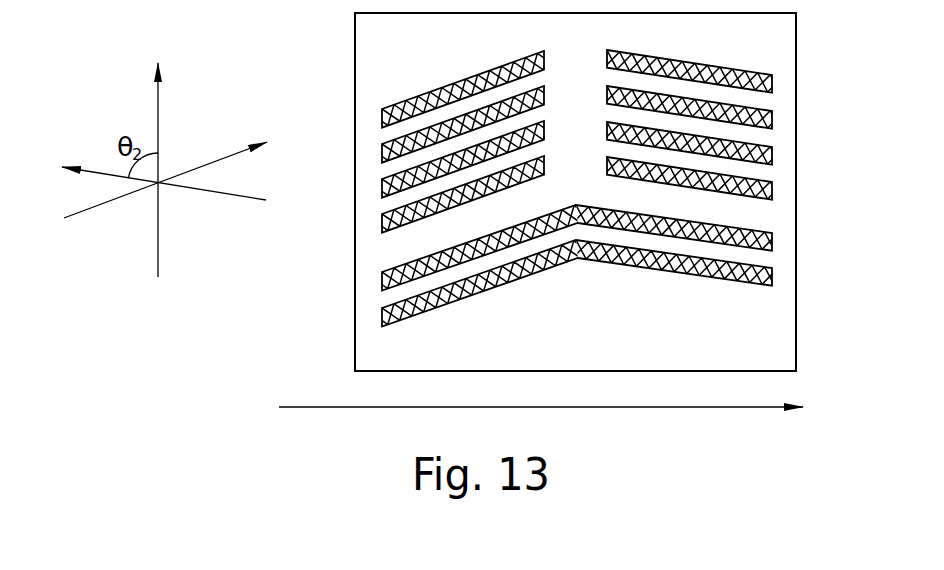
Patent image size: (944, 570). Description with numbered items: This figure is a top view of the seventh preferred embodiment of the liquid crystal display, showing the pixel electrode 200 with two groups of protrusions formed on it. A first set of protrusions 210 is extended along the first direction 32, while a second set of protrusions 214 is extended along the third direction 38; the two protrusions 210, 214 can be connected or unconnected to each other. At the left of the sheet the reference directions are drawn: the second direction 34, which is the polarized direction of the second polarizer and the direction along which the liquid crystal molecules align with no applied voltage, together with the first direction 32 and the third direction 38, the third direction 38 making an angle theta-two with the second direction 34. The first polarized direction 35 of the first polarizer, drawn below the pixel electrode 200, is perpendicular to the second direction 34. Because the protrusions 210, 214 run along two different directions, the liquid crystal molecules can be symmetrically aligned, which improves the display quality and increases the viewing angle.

The second direction 34 is at (158, 149).
The first direction 32 is at (183, 170).
The third direction 38 is at (146, 176).
The first polarized direction 35 is at (559, 404).
The second substrate 200 is at (778, 338).
The protrusion 210 is at (382, 188).
The protrusion 214 is at (772, 156).